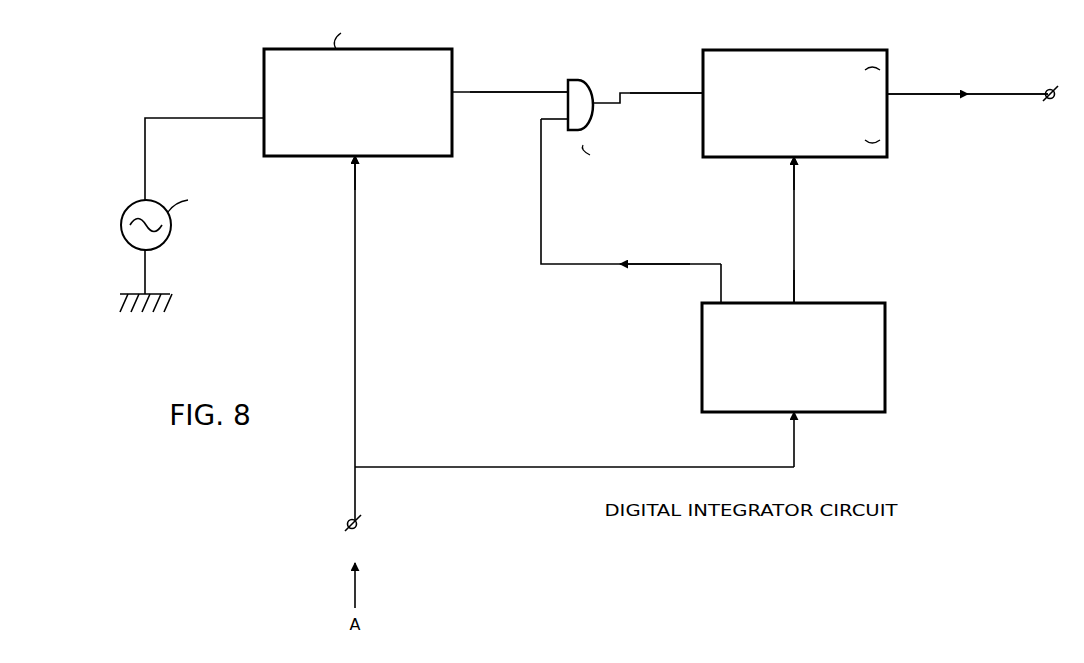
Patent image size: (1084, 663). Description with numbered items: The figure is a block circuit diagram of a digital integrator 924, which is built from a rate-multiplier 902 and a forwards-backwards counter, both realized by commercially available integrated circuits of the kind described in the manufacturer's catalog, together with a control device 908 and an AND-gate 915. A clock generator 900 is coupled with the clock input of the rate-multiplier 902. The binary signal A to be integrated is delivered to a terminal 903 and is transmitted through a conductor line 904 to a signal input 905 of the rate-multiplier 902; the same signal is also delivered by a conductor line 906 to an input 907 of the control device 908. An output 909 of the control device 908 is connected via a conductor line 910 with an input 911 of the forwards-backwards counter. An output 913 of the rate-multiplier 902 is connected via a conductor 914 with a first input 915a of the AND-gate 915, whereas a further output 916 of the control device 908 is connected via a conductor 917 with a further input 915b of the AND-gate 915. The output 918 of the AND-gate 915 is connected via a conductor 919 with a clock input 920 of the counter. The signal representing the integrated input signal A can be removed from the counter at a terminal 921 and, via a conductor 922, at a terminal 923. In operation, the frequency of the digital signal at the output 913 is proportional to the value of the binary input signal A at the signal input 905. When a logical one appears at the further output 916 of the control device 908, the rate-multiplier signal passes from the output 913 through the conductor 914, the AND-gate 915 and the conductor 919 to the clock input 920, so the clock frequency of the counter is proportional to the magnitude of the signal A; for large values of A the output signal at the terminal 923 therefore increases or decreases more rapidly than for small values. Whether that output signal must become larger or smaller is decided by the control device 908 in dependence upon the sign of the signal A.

The clock generator 900 is at (158, 244).
The rate-multiplier 902 is at (290, 48).
The terminal 903 is at (362, 519).
The conductor line 904 is at (355, 385).
The signal input 905 is at (356, 158).
The conductor line 906 is at (536, 467).
The input 907 is at (795, 414).
The control device 908 is at (886, 323).
The output 909 is at (794, 300).
The conductor line 910 is at (794, 222).
The input 911 is at (794, 158).
The output 913 is at (458, 91).
The conductor 914 is at (490, 93).
The AND-gate 915 is at (579, 80).
The first input 915a is at (526, 92).
The further input 915b is at (563, 118).
The further output 916 is at (721, 300).
The conductor 917 is at (541, 205).
The output 918 is at (599, 106).
The conductor 919 is at (656, 93).
The clock input 920 is at (702, 94).
The terminal 921 is at (888, 96).
The conductor 922 is at (976, 97).
The terminal 923 is at (1050, 93).
The digital integrator 924 is at (906, 39).